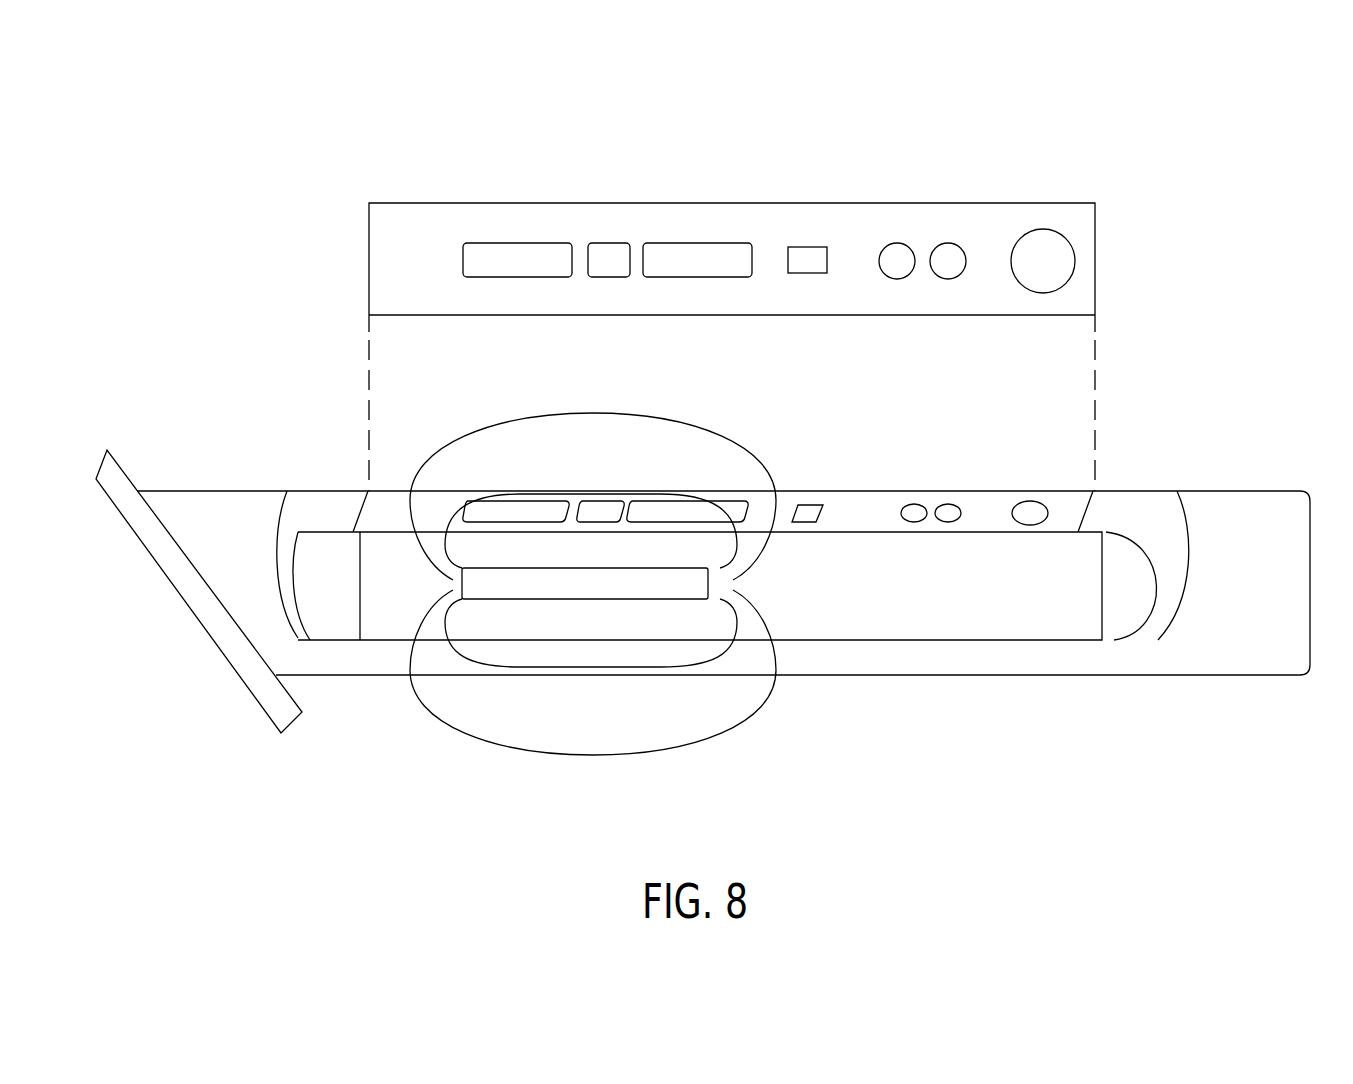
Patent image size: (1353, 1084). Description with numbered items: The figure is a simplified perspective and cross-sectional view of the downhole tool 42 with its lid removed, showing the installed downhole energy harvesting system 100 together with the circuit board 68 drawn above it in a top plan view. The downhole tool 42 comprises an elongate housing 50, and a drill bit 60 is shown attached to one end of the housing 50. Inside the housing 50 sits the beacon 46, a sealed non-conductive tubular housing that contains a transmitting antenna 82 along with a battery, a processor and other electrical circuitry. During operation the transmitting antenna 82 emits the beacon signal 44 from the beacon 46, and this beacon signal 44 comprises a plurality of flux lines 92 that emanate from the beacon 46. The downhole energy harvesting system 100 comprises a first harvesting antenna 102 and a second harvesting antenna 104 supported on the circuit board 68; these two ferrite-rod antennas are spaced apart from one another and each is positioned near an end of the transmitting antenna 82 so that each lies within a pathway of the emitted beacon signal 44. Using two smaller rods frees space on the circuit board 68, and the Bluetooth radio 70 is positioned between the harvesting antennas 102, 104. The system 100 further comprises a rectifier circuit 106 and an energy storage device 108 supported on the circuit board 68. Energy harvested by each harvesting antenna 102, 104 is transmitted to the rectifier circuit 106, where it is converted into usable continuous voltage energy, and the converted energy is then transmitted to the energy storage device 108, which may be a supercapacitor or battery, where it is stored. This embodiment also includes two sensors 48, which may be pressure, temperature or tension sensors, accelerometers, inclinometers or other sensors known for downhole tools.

The downhole tool 42 is at (1195, 452).
The beacon signal 44 is at (650, 757).
The beacon 46 is at (895, 615).
The sensor 48 is at (947, 240).
The housing 50 is at (1185, 655).
The drill bit 60 is at (198, 617).
The circuit board 68 is at (872, 220).
The Bluetooth radio 70 is at (608, 256).
The transmitting antenna 82 is at (497, 591).
The flux lines 92 is at (620, 497).
The downhole energy harvesting system 100 is at (333, 422).
The first harvesting antenna 102 is at (519, 255).
The second harvesting antenna 104 is at (668, 258).
The rectifier circuit 106 is at (807, 247).
The energy storage device 108 is at (1057, 233).